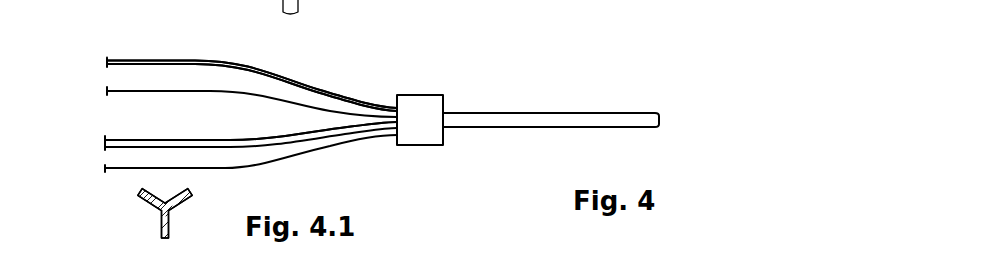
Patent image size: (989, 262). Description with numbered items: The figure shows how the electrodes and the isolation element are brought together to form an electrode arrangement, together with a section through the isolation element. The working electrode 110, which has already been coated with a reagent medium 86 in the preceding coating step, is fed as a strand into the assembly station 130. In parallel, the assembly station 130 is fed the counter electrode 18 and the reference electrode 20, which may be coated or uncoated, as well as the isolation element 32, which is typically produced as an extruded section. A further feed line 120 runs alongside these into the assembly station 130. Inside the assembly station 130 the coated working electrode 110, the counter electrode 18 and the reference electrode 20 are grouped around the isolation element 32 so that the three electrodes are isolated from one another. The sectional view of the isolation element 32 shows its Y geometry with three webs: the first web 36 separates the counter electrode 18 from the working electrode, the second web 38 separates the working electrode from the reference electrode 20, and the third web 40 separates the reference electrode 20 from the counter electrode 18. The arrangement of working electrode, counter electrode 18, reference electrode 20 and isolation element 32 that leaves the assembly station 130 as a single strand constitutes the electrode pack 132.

In FIG. 4, the counter electrode 18 is at (309, 152).
In FIG. 4, the reference electrode 20 is at (127, 90).
In FIG. 4, the isolation element 32 is at (243, 145).
In FIG. 4.1, the isolation element 32 is at (153, 216).
In FIG. 4.1, the first web 36 is at (152, 199).
In FIG. 4.1, the second web 38 is at (182, 199).
In FIG. 4.1, the third web 40 is at (170, 228).
In FIG. 4, the reagent medium 86 is at (195, 60).
In FIG. 4, the working electrode 110 is at (143, 60).
In FIG. 4, the inner tube 120 is at (206, 138).
In FIG. 4, the assembly station 130 is at (418, 95).
In FIG. 4, the electrode pack 132 is at (530, 130).